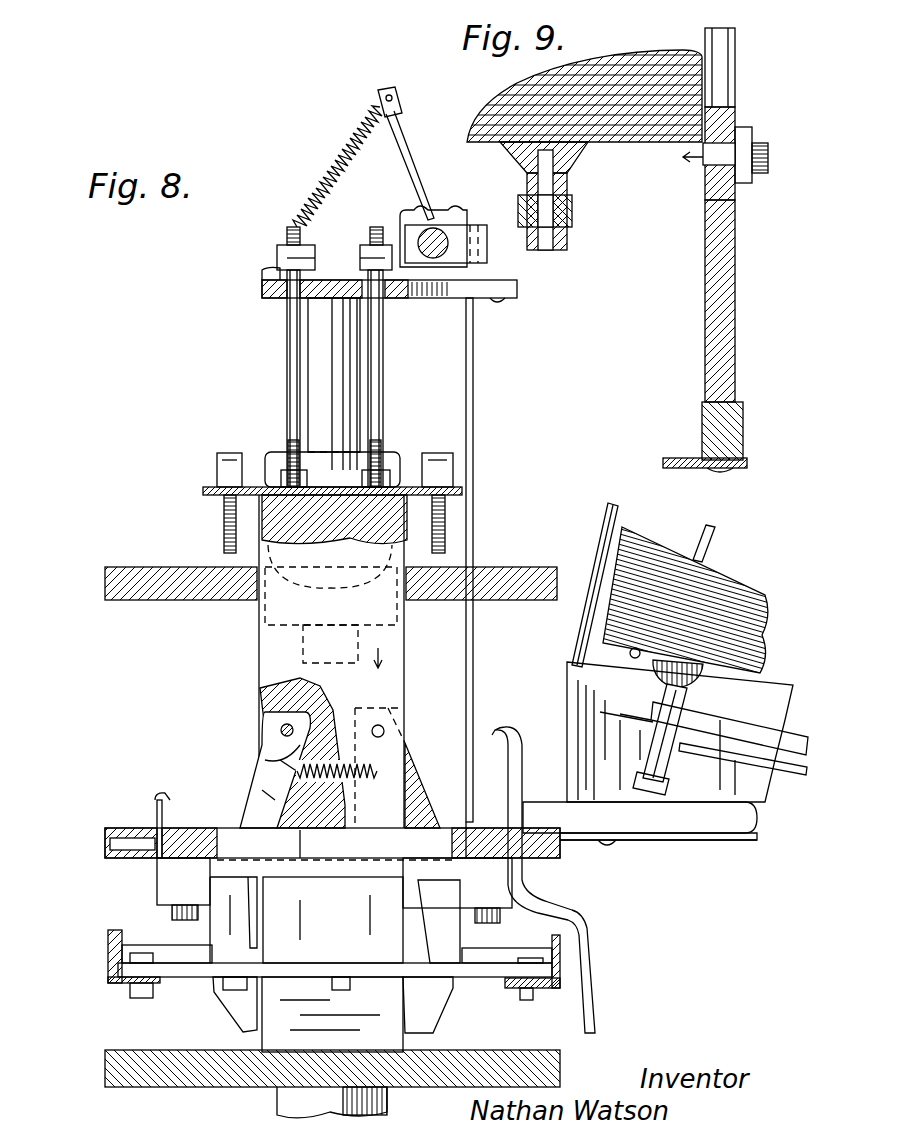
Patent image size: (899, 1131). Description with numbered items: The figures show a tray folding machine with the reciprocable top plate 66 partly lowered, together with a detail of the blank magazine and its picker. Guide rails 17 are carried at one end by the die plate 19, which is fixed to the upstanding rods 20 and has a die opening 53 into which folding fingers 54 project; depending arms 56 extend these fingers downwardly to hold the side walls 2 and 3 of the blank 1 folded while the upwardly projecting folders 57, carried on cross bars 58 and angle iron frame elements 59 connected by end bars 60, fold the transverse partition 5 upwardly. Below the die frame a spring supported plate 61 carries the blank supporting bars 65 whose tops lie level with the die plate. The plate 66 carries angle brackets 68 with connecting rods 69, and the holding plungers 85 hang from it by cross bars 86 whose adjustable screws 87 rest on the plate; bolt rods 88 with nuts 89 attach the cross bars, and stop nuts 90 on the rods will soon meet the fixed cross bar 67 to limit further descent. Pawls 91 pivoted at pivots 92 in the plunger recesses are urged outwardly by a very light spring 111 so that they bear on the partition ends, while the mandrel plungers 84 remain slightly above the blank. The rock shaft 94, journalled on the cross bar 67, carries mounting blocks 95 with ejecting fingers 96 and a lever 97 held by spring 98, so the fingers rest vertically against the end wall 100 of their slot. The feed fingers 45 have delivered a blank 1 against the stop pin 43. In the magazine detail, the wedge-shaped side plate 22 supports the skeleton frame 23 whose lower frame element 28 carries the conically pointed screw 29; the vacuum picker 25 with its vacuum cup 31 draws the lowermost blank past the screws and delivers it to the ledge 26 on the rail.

In FIG. 8, the blank 1 is at (730, 585).
In FIG. 9, the blank 1 is at (647, 55).
In FIG. 8, the side wall 2 is at (477, 830).
In FIG. 8, the side wall 3 is at (210, 828).
In FIG. 8, the transverse partition 5 is at (305, 828).
In FIG. 8, the guide rail 17 is at (545, 805).
In FIG. 9, the guide rail 17 is at (743, 435).
In FIG. 8, the die plate 19 is at (538, 868).
In FIG. 8, the upstanding shaft or rod 20 is at (320, 392).
In FIG. 8, the bottom side plate 22 is at (567, 708).
In FIG. 9, the bottom side plate 22 is at (735, 312).
In FIG. 8, the skeleton frame structure 23 is at (700, 528).
In FIG. 9, the skeleton frame structure 23 is at (735, 78).
In FIG. 8, the vacuum picker 25 is at (644, 716).
In FIG. 9, the vacuum picker 25 is at (578, 245).
In FIG. 8, the ledge or flange 26 is at (680, 842).
In FIG. 9, the ledge or flange 26 is at (675, 458).
In FIG. 8, the lower frame element 28 is at (792, 695).
In FIG. 9, the lower frame element 28 is at (752, 127).
In FIG. 8, the blank supporting screw 29 is at (630, 654).
In FIG. 9, the blank supporting screw 29 is at (690, 165).
In FIG. 9, the vacuum cup 31 is at (578, 158).
In FIG. 8, the stop pin 43 is at (157, 805).
In FIG. 8, the blank feed finger 45 is at (572, 912).
In FIG. 8, the die opening 53 is at (207, 868).
In FIG. 8, the folding finger 54 is at (240, 815).
In FIG. 8, the depending finger or arm 56 is at (228, 1002).
In FIG. 8, the upwardly projecting folder 57 is at (335, 920).
In FIG. 8, the cross bar 58 is at (482, 977).
In FIG. 8, the angle iron frame element 59 is at (108, 955).
In FIG. 8, the end bar 60 is at (490, 955).
In FIG. 8, the plate 61 is at (105, 1070).
In FIG. 8, the blank supporting bar or plunger 65 is at (275, 1040).
In FIG. 8, the plate 66 is at (105, 590).
In FIG. 8, the cross bar 67 is at (262, 290).
In FIG. 8, the angle bracket 68 is at (265, 460).
In FIG. 8, the connecting rod 69 is at (270, 645).
In FIG. 8, the fixed plunger 84 is at (383, 828).
In FIG. 8, the plunger 85 is at (405, 698).
In FIG. 8, the cross bar 86 is at (203, 487).
In FIG. 8, the adjustable screw 87 is at (224, 520).
In FIG. 8, the bolt rod 88 is at (287, 343).
In FIG. 8, the nut 89 is at (275, 452).
In FIG. 8, the stop nut 90 is at (277, 257).
In FIG. 8, the pawl 91 is at (252, 790).
In FIG. 8, the pivot 92 is at (282, 726).
In FIG. 8, the rock shaft 94 is at (433, 228).
In FIG. 8, the mounting block 95 is at (487, 235).
In FIG. 8, the ejecting bar or finger 96 is at (473, 445).
In FIG. 8, the finger or lever 97 is at (412, 160).
In FIG. 8, the spring 98 is at (333, 160).
In FIG. 8, the end wall 100 is at (490, 567).
In FIG. 8, the spring 111 is at (265, 760).